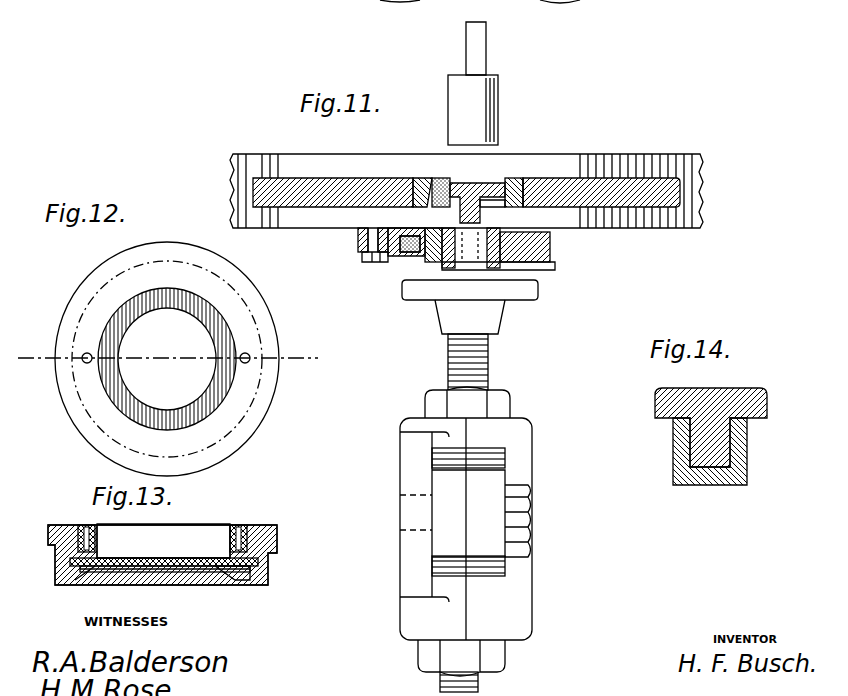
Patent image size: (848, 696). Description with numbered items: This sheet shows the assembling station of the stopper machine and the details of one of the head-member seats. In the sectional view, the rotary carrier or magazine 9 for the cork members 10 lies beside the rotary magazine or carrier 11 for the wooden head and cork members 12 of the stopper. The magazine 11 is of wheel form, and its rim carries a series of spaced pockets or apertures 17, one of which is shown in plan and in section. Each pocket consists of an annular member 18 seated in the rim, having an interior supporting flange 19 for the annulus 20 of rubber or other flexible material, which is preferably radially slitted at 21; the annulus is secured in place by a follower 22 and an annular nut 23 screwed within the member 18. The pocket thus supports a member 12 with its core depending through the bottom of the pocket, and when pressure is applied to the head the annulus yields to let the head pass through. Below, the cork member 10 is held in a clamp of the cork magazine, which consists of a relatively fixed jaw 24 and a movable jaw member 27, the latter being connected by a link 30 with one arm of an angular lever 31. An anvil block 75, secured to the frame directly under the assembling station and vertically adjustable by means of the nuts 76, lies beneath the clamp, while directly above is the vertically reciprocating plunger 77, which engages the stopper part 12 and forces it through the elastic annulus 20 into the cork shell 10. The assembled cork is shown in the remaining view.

In FIG. 11, the rotary carrier or magazine 9 is at (374, 160).
In FIG. 11, the cork member 10 is at (500, 266).
In FIG. 14, the cork member 10 is at (747, 455).
In FIG. 11, the rotary magazine or carrier 11 is at (372, 196).
In FIG. 11, the wooden head and cork member 12 is at (470, 183).
In FIG. 14, the wooden head and cork member 12 is at (767, 410).
In FIG. 12, the pocket or aperture 17 is at (166, 338).
In FIG. 13, the pocket or aperture 17 is at (156, 546).
In FIG. 11, the annular member 18 is at (528, 180).
In FIG. 12, the annular member 18 is at (272, 392).
In FIG. 13, the annular member 18 is at (277, 537).
In FIG. 13, the interior supporting flange 19 is at (230, 578).
In FIG. 11, the annulus 20 is at (490, 207).
In FIG. 12, the annulus 20 is at (212, 385).
In FIG. 13, the annulus 20 is at (200, 572).
In FIG. 12, the radial slit 21 is at (200, 395).
In FIG. 11, the follower 22 is at (430, 178).
In FIG. 13, the follower 22 is at (258, 562).
In FIG. 11, the annular nut 23 is at (514, 178).
In FIG. 12, the annular nut 23 is at (225, 422).
In FIG. 13, the annular nut 23 is at (247, 525).
In FIG. 11, the fixed jaw 24 is at (550, 250).
In FIG. 11, the movable jaw member 27 is at (414, 252).
In FIG. 11, the link 30 is at (405, 256).
In FIG. 11, the angular lever 31 is at (358, 252).
In FIG. 11, the anvil block 75 is at (516, 290).
In FIG. 11, the nut 76 is at (500, 405).
In FIG. 11, the vertically reciprocating plunger 77 is at (498, 103).